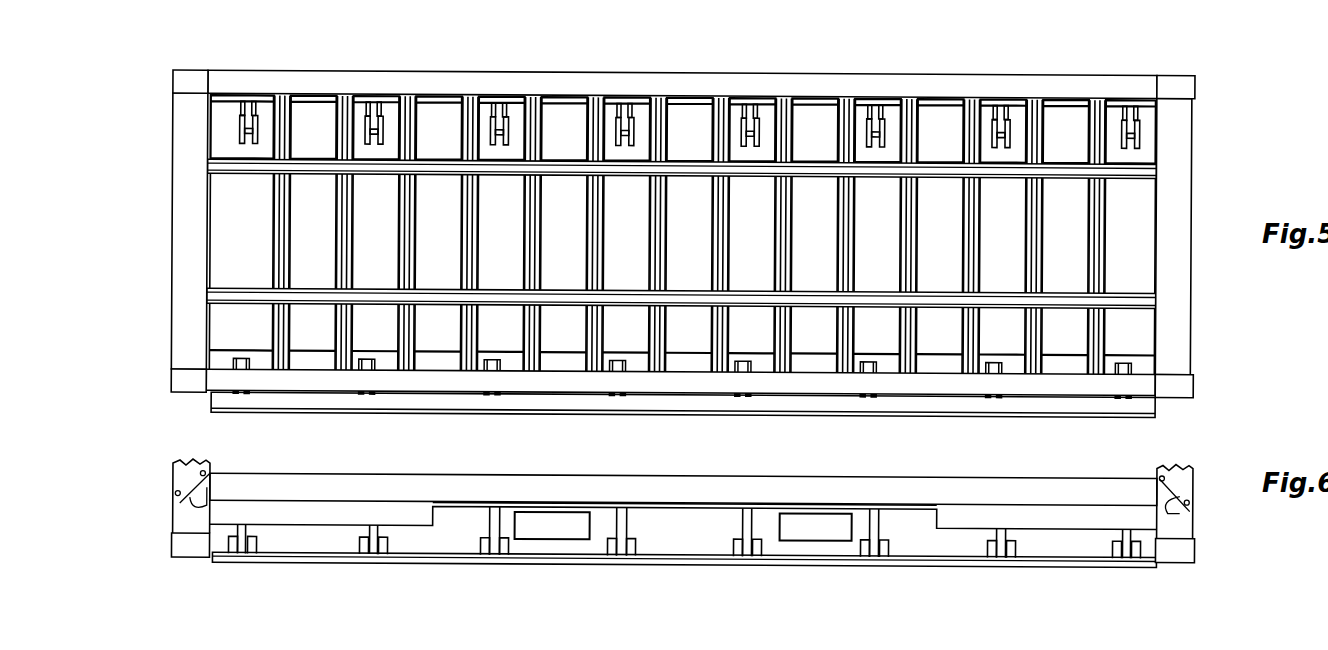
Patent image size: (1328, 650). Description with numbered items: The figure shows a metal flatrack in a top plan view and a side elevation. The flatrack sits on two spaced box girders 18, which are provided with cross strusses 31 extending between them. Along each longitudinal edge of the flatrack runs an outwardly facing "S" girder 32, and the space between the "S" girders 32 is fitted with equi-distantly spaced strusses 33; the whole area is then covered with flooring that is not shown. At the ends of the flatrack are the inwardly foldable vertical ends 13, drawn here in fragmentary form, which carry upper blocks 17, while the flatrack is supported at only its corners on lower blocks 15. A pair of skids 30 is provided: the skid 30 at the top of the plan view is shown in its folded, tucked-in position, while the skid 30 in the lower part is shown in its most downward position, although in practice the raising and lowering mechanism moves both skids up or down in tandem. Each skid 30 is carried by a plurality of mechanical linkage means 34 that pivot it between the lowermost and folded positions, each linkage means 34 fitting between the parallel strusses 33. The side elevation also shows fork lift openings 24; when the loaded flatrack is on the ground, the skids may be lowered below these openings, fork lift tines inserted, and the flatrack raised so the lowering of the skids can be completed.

In FIG. 5, the vertical end 13 is at (205, 252).
In FIG. 6, the vertical end 13 is at (188, 476).
In FIG. 6, the lower block 15 is at (190, 552).
In FIG. 5, the upper block 17 is at (190, 75).
In FIG. 5, the box girder 18 is at (1117, 174).
In FIG. 6, the box girder 18 is at (923, 534).
In FIG. 6, the fork lift opening 24 is at (833, 531).
In FIG. 5, the skid 30 is at (1060, 120).
In FIG. 5, the cross struss 31 is at (419, 247).
In FIG. 5, the "S" girder 32 is at (925, 381).
In FIG. 6, the "S" girder 32 is at (745, 474).
In FIG. 5, the struss 33 is at (548, 93).
In FIG. 5, the mechanical linkage means 34 is at (893, 121).